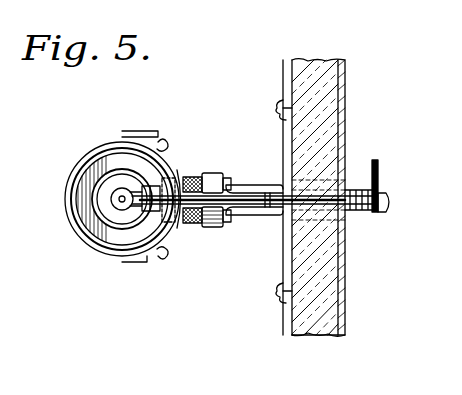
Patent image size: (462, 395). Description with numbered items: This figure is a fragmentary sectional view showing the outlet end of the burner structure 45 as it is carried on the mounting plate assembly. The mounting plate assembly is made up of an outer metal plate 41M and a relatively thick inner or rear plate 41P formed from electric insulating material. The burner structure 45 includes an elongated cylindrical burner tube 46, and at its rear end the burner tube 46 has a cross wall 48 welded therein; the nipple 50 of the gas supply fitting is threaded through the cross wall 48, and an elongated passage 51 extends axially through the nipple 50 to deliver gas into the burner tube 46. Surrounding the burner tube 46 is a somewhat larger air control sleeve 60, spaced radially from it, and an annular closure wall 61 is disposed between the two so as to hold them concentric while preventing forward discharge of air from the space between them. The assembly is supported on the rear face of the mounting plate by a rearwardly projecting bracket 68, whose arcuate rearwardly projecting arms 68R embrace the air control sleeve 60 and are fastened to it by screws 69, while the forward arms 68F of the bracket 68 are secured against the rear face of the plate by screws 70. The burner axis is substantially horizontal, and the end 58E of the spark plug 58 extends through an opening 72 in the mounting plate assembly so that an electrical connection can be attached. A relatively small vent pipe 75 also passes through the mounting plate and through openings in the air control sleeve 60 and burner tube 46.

The burner structure 45 is at (70, 160).
The cross wall 48 is at (115, 172).
The nipple 50 is at (112, 186).
The passage 51 is at (118, 198).
The burner tube 46 is at (92, 218).
The air control sleeve 60 is at (98, 244).
The annular closure wall 61 is at (118, 250).
The screws 69 is at (164, 142).
The rearwardly projecting arms 68R is at (184, 160).
The spark plug 58 is at (240, 218).
The vent pipe 75 is at (270, 208).
The bracket 68 is at (240, 190).
The forward arms 68F is at (287, 139).
The screws 70 is at (278, 108).
The outer metal plate 41M is at (346, 306).
The inner plate 41P is at (310, 335).
The opening 72 is at (347, 238).
The end of the spark plug 58E is at (350, 192).